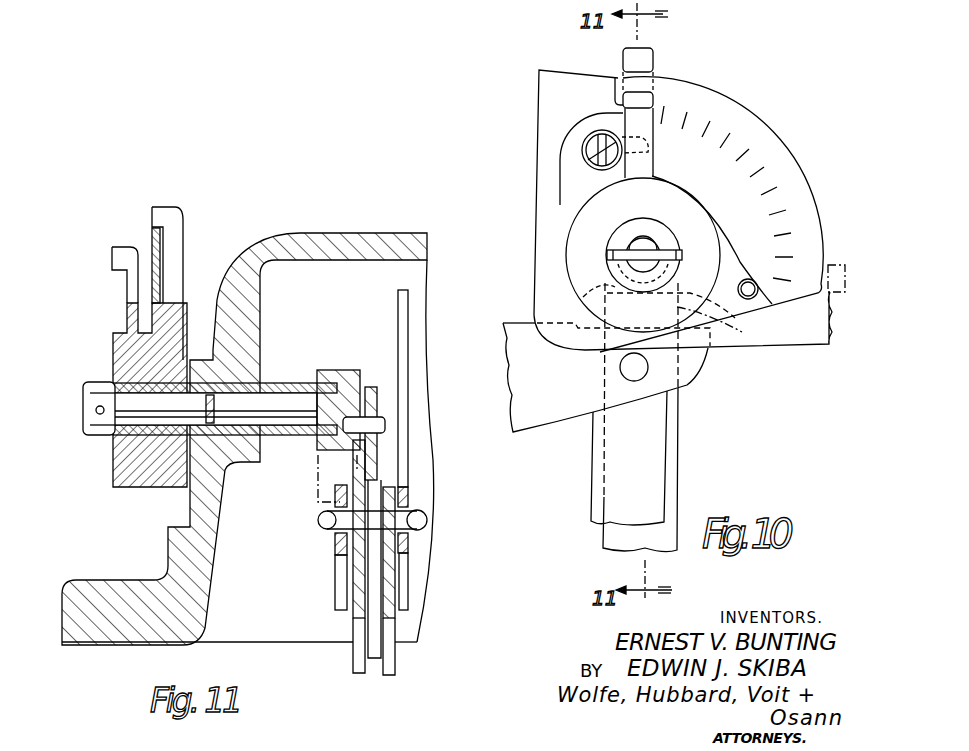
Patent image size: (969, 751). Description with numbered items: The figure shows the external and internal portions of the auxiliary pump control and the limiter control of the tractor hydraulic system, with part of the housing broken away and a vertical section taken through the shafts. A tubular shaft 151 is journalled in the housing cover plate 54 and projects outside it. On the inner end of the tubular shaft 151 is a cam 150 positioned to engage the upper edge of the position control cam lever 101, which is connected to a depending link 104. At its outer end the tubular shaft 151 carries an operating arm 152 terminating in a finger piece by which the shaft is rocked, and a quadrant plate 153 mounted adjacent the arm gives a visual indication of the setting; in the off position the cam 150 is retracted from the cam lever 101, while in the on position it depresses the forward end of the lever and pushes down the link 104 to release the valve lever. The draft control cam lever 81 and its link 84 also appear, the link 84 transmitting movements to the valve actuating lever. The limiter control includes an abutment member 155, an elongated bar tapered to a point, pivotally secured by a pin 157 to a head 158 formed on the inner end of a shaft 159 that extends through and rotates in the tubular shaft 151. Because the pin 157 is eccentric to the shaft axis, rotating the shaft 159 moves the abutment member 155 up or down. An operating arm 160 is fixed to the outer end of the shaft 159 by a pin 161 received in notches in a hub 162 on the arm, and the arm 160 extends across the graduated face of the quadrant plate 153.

In FIG. 11, the housing cover plate 54 is at (291, 236).
In FIG. 10, the housing cover plate 54 is at (552, 93).
In FIG. 11, the cam lever 81 is at (410, 498).
In FIG. 11, the link 84 is at (390, 668).
In FIG. 11, the cam lever 101 is at (335, 548).
In FIG. 10, the cam lever 101 is at (562, 410).
In FIG. 11, the link 104 is at (353, 626).
In FIG. 10, the link 104 is at (600, 505).
In FIG. 11, the cam 150 is at (318, 470).
In FIG. 10, the cam 150 is at (692, 316).
In FIG. 11, the tubular shaft 151 is at (302, 390).
In FIG. 11, the operating arm 152 is at (185, 258).
In FIG. 10, the operating arm 152 is at (658, 62).
In FIG. 11, the quadrant plate 153 is at (157, 233).
In FIG. 10, the quadrant plate 153 is at (755, 124).
In FIG. 11, the abutment member 155 is at (373, 660).
In FIG. 10, the abutment member 155 is at (673, 482).
In FIG. 11, the pin 157 is at (385, 425).
In FIG. 10, the pin 157 is at (583, 297).
In FIG. 11, the head 158 is at (346, 372).
In FIG. 11, the shaft 159 is at (272, 400).
In FIG. 10, the shaft 159 is at (636, 245).
In FIG. 11, the operating arm 160 is at (130, 281).
In FIG. 10, the operating arm 160 is at (652, 132).
In FIG. 11, the pin 161 is at (100, 406).
In FIG. 10, the pin 161 is at (608, 254).
In FIG. 11, the hub 162 is at (95, 440).
In FIG. 10, the hub 162 is at (646, 238).